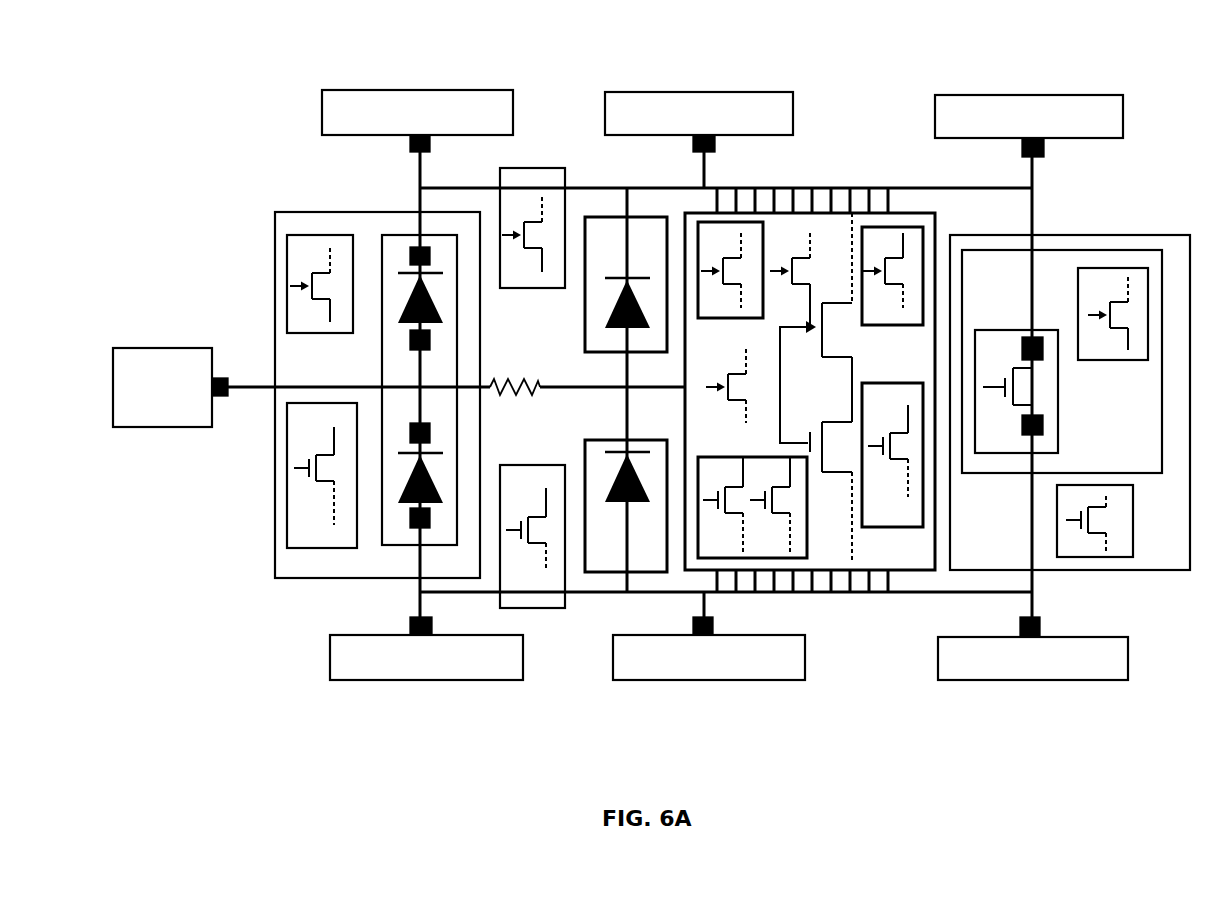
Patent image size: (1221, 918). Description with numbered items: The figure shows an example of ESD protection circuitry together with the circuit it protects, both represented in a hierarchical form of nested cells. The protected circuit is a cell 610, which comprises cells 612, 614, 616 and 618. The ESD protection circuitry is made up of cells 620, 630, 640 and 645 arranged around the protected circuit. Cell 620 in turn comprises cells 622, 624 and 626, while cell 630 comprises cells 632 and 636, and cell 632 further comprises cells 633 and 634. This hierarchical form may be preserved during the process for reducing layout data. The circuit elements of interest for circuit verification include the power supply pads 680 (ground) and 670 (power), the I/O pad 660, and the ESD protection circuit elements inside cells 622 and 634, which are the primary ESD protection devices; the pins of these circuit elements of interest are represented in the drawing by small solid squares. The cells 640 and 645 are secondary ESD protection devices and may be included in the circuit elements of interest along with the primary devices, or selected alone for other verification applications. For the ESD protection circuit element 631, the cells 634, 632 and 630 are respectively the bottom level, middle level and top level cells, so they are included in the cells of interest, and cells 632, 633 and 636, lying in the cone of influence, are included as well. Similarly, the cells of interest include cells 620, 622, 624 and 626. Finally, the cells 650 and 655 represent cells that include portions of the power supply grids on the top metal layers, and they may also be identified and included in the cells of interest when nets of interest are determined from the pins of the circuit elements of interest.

The cell 610 is at (916, 576).
The cell 612 is at (899, 522).
The cell 614 is at (897, 321).
The cell 616 is at (733, 313).
The cell 618 is at (735, 554).
The cell 620 is at (272, 582).
The cell 622 is at (378, 550).
The cell 624 is at (323, 329).
The cell 626 is at (325, 544).
The cell 630 is at (1151, 580).
The ESD protection circuit element 631 is at (1034, 394).
The cell 632 is at (1154, 466).
The cell 633 is at (1113, 356).
The cell 634 is at (1014, 449).
The cell 636 is at (1091, 551).
The cell 640 is at (621, 340).
The cell 645 is at (625, 565).
The cell 650 is at (536, 283).
The cell 655 is at (536, 495).
The I/O pad 660 is at (161, 434).
The power supply pad 670 is at (492, 84).
The power supply pad 680 is at (464, 684).